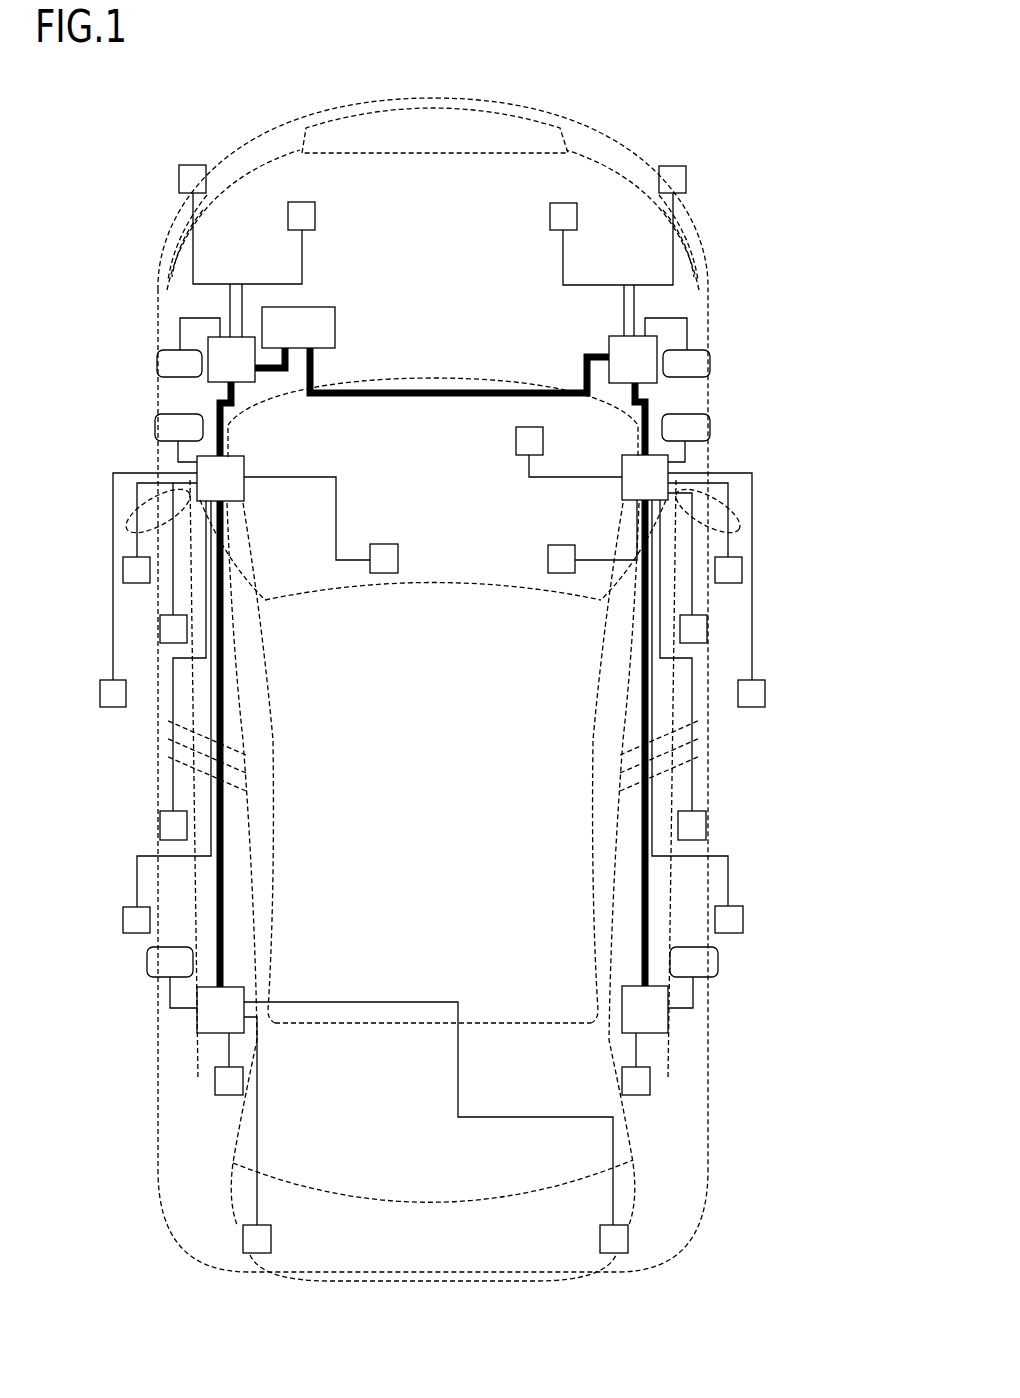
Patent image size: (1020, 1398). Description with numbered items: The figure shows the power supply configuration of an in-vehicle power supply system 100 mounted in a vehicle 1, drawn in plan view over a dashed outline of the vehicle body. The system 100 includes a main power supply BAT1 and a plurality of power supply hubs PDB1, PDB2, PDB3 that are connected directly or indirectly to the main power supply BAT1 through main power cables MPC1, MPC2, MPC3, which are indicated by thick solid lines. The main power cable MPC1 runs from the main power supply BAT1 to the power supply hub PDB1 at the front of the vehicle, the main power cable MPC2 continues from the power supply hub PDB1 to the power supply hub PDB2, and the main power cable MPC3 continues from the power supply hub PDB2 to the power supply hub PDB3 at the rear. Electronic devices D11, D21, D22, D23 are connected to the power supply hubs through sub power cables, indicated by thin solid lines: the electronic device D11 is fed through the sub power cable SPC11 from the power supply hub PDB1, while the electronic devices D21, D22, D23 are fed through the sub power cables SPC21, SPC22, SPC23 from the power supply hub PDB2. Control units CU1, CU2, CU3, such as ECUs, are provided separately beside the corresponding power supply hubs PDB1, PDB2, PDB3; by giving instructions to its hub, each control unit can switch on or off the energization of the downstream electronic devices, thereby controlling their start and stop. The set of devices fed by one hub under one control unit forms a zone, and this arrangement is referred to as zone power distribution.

The vehicle 1 is at (122, 173).
The in-vehicle power supply system 100 is at (637, 82).
The electronic device D11 is at (718, 145).
The sub power cable SPC11 is at (743, 200).
The main power supply BAT1 is at (378, 307).
The power supply hub PDB1 is at (608, 340).
The control unit CU1 is at (750, 342).
The main power cable MPC1 is at (584, 382).
The main power cable MPC2 is at (652, 413).
The control unit CU2 is at (711, 432).
The electronic device D22 is at (516, 447).
The sub power cable SPC22 is at (527, 468).
The power supply hub PDB2 is at (621, 488).
The sub power cable SPC23 is at (695, 558).
The electronic device D21 is at (547, 557).
The electronic device D23 is at (709, 622).
The sub power cable SPC21 is at (603, 560).
The main power cable MPC3 is at (641, 850).
The control unit CU3 is at (719, 962).
The power supply hub PDB3 is at (670, 1030).